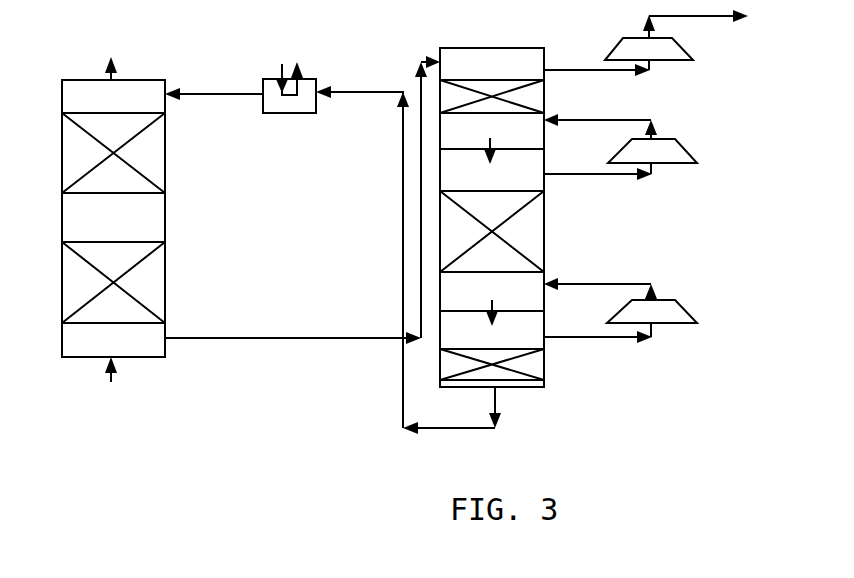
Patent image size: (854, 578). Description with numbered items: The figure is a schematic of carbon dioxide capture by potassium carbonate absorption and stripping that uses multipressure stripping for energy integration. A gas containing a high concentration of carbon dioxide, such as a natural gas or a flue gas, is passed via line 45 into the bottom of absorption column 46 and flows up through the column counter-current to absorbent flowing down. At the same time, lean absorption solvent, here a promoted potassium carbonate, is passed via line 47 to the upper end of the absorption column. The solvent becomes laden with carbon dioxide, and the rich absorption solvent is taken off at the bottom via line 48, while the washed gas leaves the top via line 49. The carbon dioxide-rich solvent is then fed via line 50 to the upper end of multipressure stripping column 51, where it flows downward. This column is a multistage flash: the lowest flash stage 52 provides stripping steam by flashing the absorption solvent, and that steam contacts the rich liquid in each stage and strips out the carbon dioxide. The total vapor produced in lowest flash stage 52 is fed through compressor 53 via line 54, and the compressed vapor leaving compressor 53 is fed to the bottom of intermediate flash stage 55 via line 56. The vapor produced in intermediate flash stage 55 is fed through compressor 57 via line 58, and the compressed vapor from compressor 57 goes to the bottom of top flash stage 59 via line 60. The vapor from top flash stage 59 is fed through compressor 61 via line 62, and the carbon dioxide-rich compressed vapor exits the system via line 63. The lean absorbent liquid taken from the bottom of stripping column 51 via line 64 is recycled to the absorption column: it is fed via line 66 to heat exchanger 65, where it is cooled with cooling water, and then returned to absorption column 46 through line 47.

The line 45 is at (108, 380).
The absorption column 46 is at (62, 212).
The line 47 is at (208, 97).
The line 48 is at (200, 338).
The line 49 is at (110, 78).
The line 50 is at (437, 62).
The multipressure stripping column 51 is at (519, 199).
The lowest flash stage 52 is at (546, 372).
The compressor 53 is at (690, 312).
The line 54 is at (594, 337).
The intermediate flash stage 55 is at (546, 262).
The line 56 is at (640, 284).
The compressor 57 is at (688, 148).
The line 58 is at (598, 175).
The top flash stage 59 is at (546, 91).
The line 60 is at (652, 118).
The compressor 61 is at (612, 48).
The line 62 is at (557, 68).
The line 63 is at (648, 27).
The line 64 is at (490, 410).
The heat exchanger 65 is at (290, 113).
The line 66 is at (356, 92).